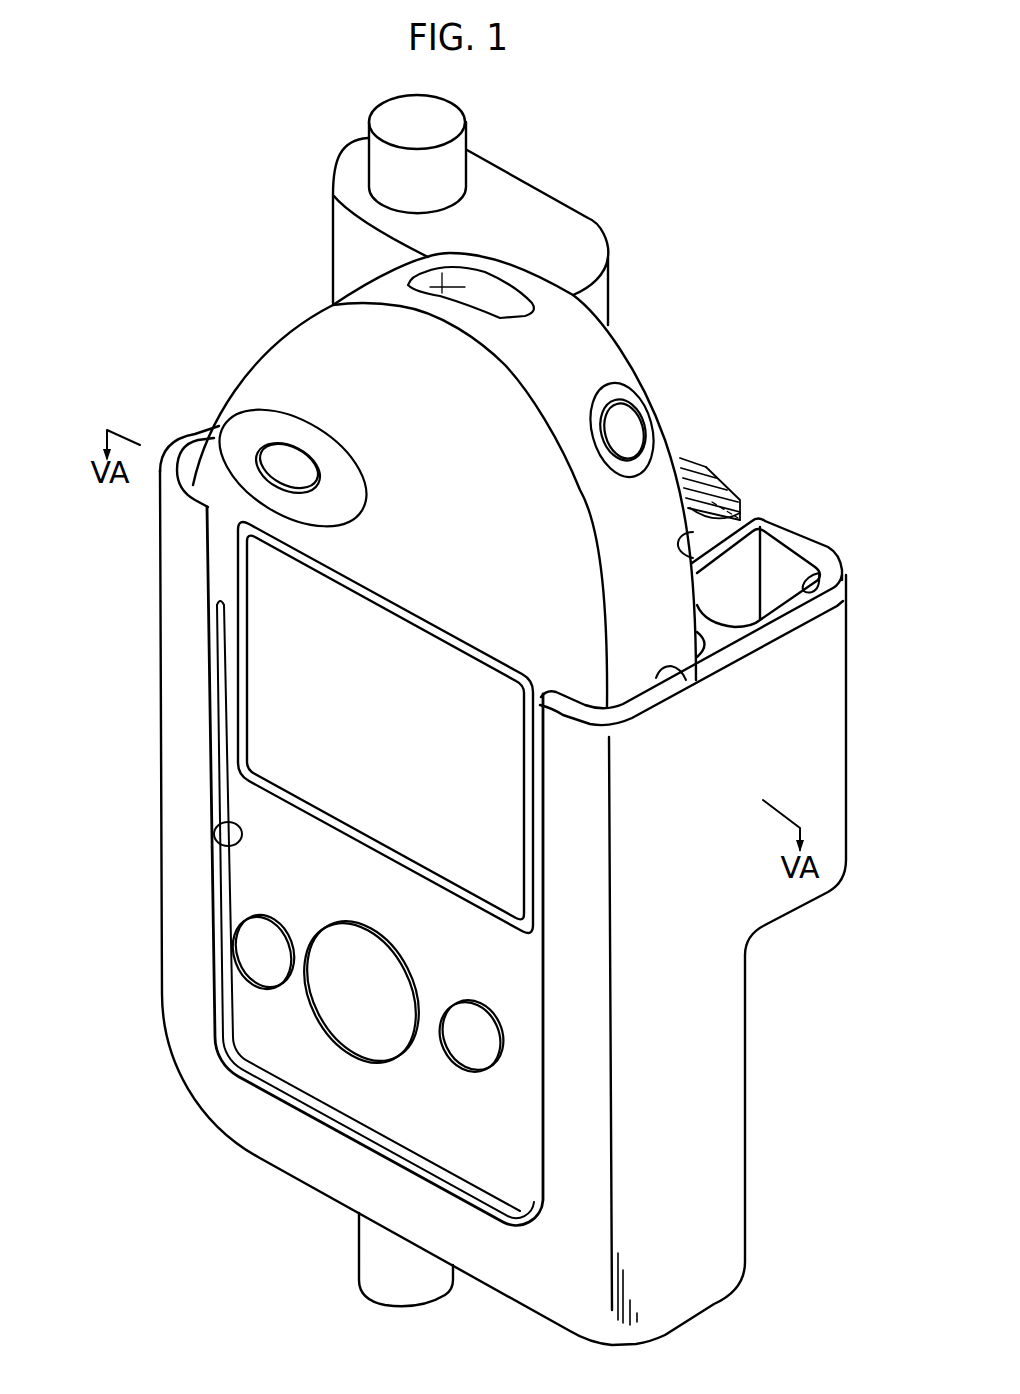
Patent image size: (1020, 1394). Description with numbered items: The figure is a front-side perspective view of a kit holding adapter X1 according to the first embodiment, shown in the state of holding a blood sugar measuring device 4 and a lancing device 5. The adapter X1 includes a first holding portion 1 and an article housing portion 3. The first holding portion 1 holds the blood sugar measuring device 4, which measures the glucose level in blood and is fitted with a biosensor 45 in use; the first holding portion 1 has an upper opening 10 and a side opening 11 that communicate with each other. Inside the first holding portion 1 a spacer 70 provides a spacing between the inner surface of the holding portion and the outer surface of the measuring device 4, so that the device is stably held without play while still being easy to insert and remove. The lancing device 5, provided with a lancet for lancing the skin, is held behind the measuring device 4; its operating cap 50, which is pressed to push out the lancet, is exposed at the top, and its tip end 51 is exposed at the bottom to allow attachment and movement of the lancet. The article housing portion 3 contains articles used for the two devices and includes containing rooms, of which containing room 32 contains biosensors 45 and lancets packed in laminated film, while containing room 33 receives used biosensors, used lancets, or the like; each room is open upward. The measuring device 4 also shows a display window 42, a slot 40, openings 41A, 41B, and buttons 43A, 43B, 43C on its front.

The first holding portion 1 is at (156, 748).
The article housing portion 3 is at (812, 532).
The blood sugar measuring device 4 is at (668, 420).
The lancing device 5 is at (590, 217).
The upper opening 10 is at (690, 680).
The side opening 11 is at (215, 833).
The containing room 32 is at (690, 535).
The containing room 33 is at (822, 575).
The slot 40 is at (438, 288).
The hole 41A is at (633, 440).
The opening 41B is at (270, 460).
The display window 42 is at (258, 668).
The button 43A is at (243, 953).
The button 43B is at (330, 1003).
The button 43C is at (464, 1025).
The biosensor 45 is at (741, 518).
The operating cap 50 is at (440, 128).
The tip end 51 is at (392, 1290).
The spacer 70 is at (226, 878).
The kit holding adapter X1 is at (215, 1228).